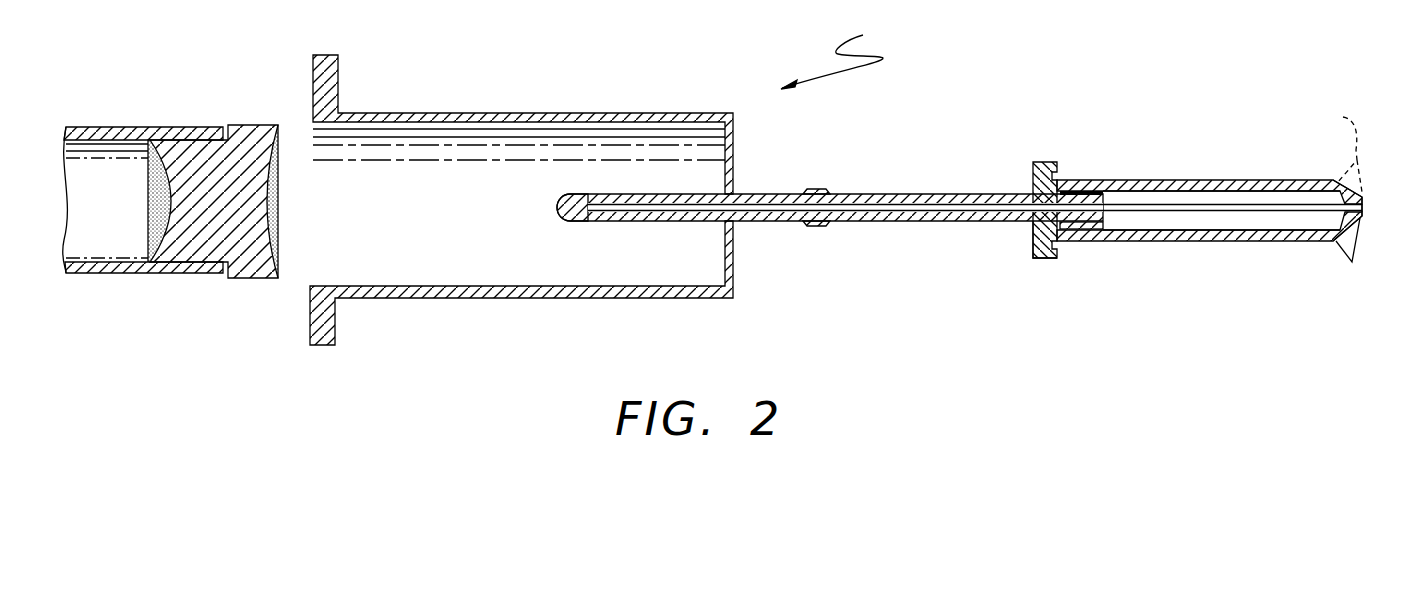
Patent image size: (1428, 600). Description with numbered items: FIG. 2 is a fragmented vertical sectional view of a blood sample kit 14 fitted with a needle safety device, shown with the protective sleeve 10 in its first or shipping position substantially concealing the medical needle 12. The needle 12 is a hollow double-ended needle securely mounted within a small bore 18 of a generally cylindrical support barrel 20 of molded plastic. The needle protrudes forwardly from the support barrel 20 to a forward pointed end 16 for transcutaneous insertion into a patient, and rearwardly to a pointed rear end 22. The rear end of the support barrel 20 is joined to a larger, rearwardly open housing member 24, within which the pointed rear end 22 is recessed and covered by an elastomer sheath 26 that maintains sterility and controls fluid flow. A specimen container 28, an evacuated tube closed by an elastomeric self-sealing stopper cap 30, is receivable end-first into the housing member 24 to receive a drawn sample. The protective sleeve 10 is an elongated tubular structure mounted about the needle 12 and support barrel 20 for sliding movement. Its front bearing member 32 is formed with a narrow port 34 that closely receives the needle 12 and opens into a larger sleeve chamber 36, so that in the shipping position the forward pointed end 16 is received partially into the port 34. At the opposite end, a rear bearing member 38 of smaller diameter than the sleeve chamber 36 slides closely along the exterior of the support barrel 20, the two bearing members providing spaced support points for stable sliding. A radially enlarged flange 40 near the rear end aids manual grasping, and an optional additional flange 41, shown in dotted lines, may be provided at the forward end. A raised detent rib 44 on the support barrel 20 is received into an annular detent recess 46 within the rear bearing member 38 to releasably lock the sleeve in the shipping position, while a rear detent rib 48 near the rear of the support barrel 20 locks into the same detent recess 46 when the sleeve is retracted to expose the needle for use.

The protective sleeve 10 is at (1190, 180).
The medical needle 12 is at (1252, 227).
The blood sample kit 14 is at (846, 54).
The forward pointed end 16 is at (1362, 210).
The small bore 18 is at (897, 205).
The support barrel 20 is at (897, 222).
The pointed rear end 22 is at (587, 194).
The housing member 24 is at (520, 298).
The elastomer sheath 26 is at (560, 210).
The specimen container 28 is at (112, 273).
The stopper cap 30 is at (266, 124).
The front bearing member 32 is at (1366, 192).
The port 34 is at (1362, 226).
The sleeve chamber 36 is at (1290, 195).
The rear bearing member 38 is at (1066, 230).
The flange 40 is at (1044, 162).
The additional flange 41 is at (1343, 117).
The detent rib 44 is at (1035, 240).
The detent recess 46 is at (1081, 191).
The rear detent rib 48 is at (818, 189).